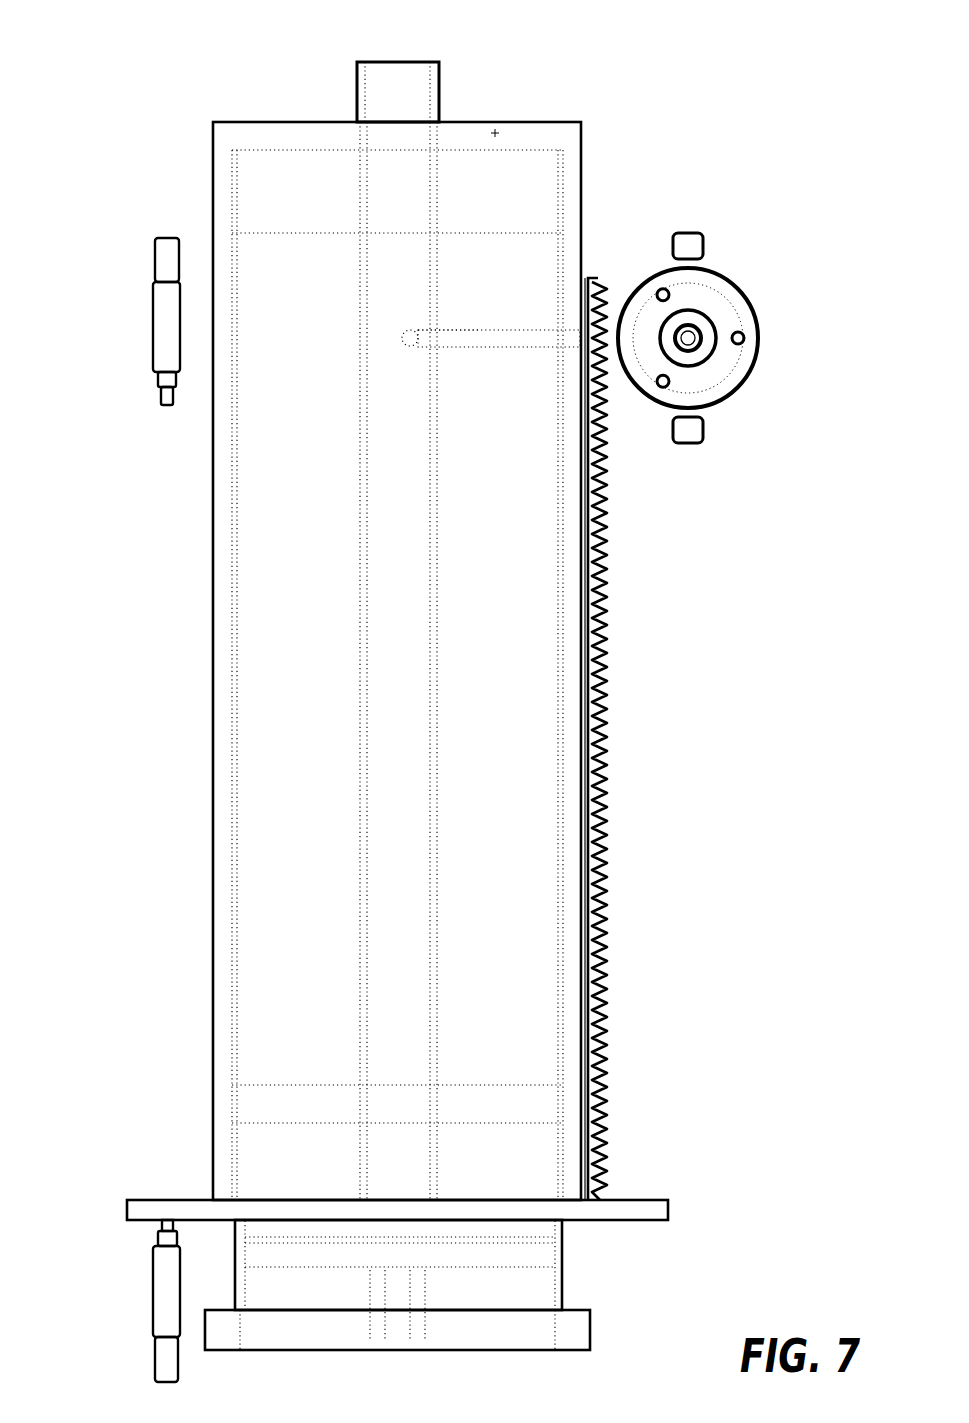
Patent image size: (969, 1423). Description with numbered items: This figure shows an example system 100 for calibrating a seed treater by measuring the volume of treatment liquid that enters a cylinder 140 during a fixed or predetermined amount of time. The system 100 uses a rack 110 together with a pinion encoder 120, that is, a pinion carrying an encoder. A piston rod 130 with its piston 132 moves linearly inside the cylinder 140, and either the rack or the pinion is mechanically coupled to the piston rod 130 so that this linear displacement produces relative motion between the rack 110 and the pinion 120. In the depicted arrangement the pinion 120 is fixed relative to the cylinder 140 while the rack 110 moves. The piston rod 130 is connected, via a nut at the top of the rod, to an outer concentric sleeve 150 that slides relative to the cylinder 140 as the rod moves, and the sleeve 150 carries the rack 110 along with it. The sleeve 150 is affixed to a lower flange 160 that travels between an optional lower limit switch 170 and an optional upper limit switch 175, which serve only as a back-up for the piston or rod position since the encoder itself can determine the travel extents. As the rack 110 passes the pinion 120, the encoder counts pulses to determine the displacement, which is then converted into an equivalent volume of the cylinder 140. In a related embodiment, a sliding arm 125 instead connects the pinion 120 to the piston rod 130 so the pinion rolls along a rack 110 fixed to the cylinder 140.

The system 100 is at (710, 554).
The rack 110 is at (602, 738).
The pinion encoder 120 is at (755, 270).
The sliding arm 125 is at (525, 332).
The piston rod 130 is at (390, 62).
The piston 132 is at (535, 1105).
The cylinder 140 is at (553, 958).
The outer concentric sleeve 150 is at (213, 790).
The lower flange 160 is at (650, 1212).
The lower limit switch 170 is at (165, 1300).
The upper limit switch 175 is at (165, 310).